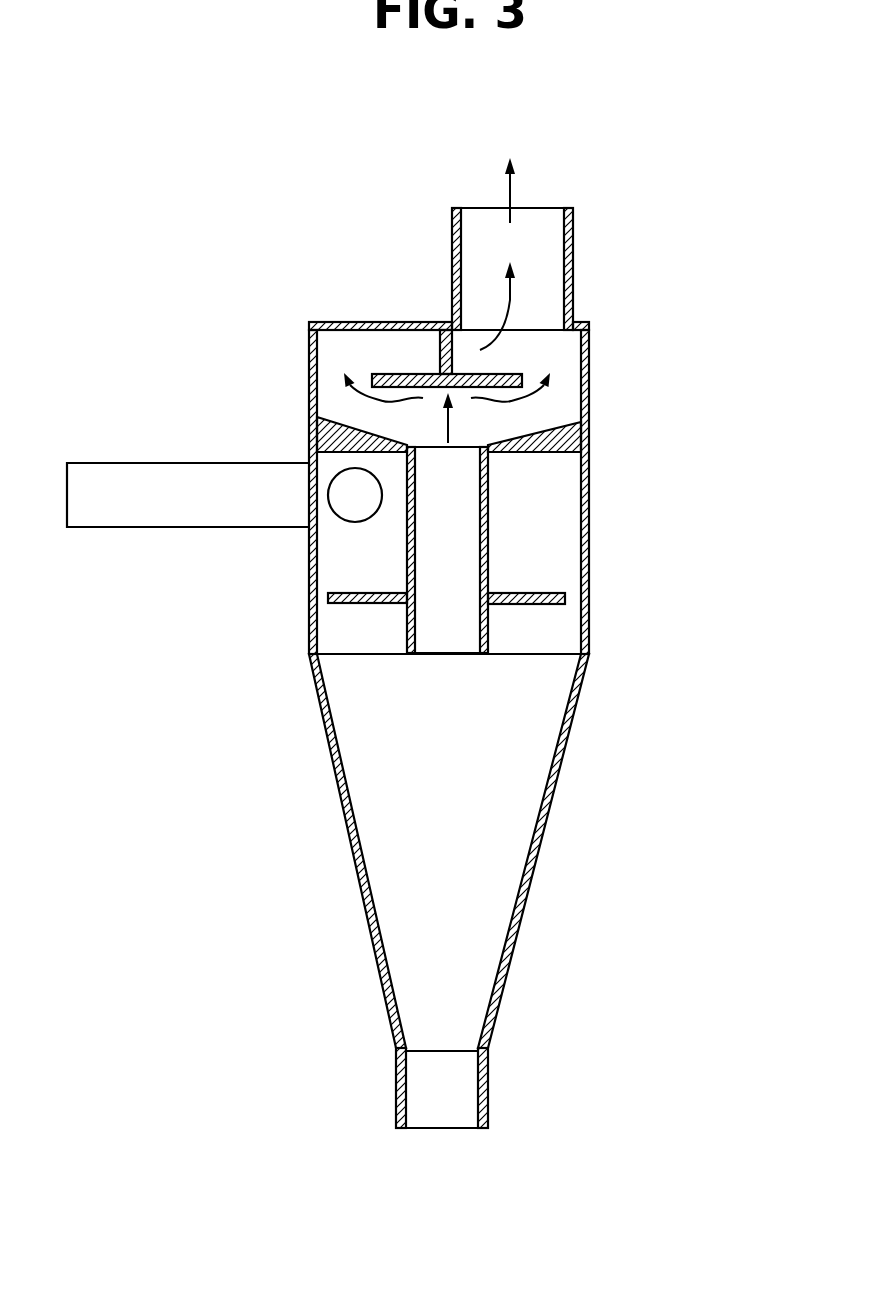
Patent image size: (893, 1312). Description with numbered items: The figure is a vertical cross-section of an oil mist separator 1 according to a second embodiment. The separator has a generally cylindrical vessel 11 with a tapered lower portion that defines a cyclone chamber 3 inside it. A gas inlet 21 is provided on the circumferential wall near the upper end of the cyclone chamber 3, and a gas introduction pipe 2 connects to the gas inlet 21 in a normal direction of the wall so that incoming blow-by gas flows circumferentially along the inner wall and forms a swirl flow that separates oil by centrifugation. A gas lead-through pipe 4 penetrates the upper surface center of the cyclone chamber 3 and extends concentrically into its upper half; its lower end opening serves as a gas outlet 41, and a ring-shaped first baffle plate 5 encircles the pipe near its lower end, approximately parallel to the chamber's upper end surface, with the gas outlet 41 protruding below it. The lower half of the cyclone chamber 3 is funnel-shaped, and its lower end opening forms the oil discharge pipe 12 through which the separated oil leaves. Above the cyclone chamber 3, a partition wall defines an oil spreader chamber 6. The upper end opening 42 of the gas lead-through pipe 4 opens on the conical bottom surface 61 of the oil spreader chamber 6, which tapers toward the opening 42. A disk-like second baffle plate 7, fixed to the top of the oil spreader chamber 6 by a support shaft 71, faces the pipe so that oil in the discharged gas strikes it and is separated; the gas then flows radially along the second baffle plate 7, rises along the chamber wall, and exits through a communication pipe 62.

The oil mist separator 1 is at (330, 275).
The gas introduction pipe 2 is at (230, 522).
The cyclone chamber 3 is at (589, 473).
The gas lead-through pipe 4 is at (488, 532).
The first baffle plate 5 is at (523, 606).
The oil spreader chamber 6 is at (337, 347).
The second baffle plate 7 is at (490, 372).
The vessel 11 is at (305, 598).
The oil discharge pipe 12 is at (397, 1097).
The gas inlet 21 is at (345, 492).
The gas outlet 41 is at (434, 654).
The upper end opening 42 is at (480, 445).
The bottom surface 61 is at (345, 425).
The communication pipe 62 is at (573, 243).
The support shaft 71 is at (440, 353).